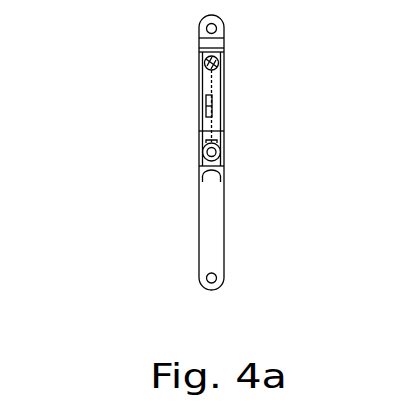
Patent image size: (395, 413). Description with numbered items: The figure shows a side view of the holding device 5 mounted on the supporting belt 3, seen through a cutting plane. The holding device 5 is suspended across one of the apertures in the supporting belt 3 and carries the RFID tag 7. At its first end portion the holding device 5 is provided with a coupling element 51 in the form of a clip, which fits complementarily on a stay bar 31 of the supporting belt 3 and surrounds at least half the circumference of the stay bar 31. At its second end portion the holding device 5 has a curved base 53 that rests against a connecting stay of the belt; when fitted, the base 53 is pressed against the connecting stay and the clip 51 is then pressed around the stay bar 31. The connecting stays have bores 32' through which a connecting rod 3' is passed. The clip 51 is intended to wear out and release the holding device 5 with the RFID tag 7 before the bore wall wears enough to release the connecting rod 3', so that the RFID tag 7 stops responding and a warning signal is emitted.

The supporting belt 3 is at (118, 152).
The connecting rod 3' is at (271, 164).
The holding device 5 is at (222, 90).
The RFID tag 7 is at (206, 97).
The stay bar 31 is at (205, 61).
The bore 32' is at (127, 149).
The coupling element 51 is at (218, 63).
The curved base 53 is at (216, 140).